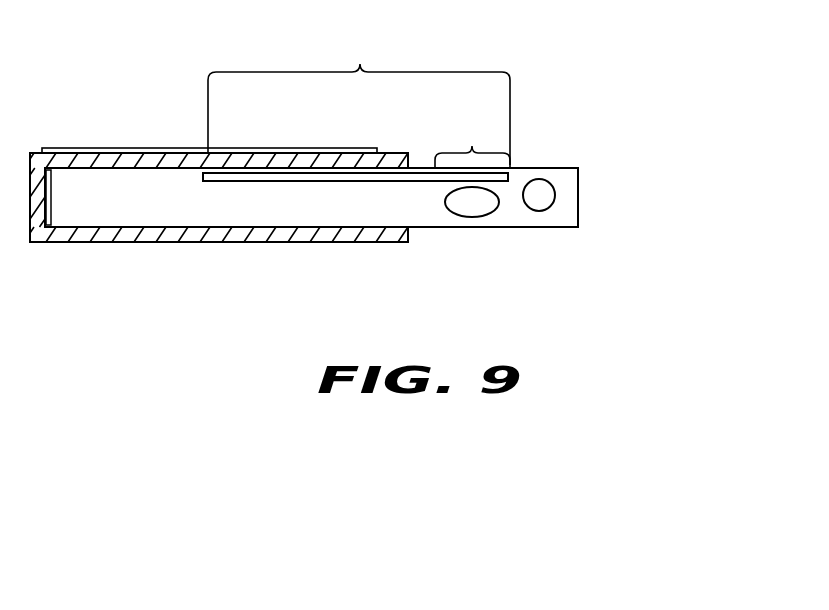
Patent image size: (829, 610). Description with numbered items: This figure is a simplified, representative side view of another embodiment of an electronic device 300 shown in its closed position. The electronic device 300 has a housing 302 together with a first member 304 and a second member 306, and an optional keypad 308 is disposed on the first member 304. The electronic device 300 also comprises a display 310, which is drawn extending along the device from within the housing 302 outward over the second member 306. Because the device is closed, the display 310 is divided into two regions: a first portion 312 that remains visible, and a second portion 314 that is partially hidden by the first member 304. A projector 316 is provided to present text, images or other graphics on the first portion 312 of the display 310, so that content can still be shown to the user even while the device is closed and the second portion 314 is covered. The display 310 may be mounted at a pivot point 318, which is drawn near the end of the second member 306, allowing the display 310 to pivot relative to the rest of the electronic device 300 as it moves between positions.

The electronic device 300 is at (630, 48).
The housing 302 is at (340, 243).
The first member 304 is at (84, 243).
The second member 306 is at (580, 197).
The keypad 308 is at (86, 148).
The display 310 is at (227, 182).
The first portion 312 is at (472, 140).
The second portion 314 is at (359, 98).
The projector 316 is at (446, 203).
The pivot point 318 is at (533, 211).